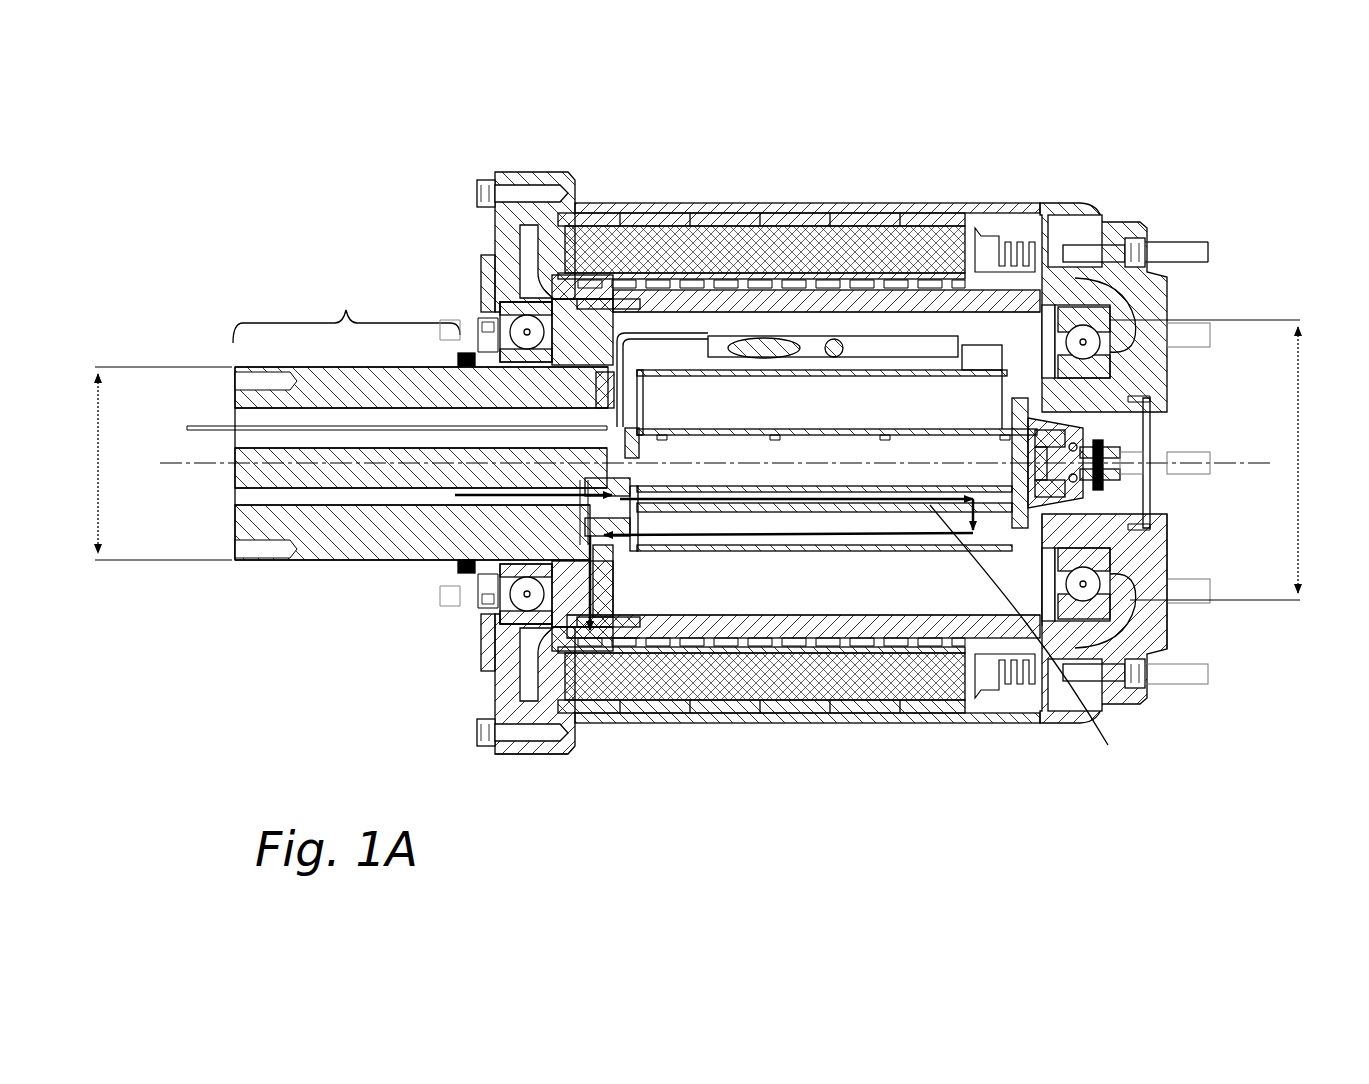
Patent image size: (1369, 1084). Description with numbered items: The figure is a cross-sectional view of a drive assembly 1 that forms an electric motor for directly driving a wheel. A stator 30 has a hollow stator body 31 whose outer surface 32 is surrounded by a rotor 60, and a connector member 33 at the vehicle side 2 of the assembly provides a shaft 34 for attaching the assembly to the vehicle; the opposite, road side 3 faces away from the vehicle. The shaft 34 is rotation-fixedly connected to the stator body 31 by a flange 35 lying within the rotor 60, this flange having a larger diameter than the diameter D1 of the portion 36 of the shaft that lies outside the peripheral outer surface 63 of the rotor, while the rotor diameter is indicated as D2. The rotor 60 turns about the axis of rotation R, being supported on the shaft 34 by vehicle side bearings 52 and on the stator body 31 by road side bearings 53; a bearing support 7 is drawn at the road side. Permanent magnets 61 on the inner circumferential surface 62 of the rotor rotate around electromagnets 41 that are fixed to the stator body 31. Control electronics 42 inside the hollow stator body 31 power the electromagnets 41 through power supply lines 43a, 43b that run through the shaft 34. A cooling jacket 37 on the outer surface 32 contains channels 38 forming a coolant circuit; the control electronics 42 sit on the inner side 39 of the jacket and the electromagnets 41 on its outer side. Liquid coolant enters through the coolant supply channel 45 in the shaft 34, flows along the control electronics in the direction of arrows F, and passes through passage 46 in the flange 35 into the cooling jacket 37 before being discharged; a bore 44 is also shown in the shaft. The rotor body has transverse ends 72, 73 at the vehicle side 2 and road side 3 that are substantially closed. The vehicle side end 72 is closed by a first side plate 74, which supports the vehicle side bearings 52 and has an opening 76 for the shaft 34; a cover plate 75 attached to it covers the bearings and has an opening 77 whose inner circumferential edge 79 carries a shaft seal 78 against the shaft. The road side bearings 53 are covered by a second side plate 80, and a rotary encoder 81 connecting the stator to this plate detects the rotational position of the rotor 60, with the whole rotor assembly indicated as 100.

The drive assembly 1 is at (277, 285).
The vehicle side 2 is at (210, 410).
The road side 3 is at (1188, 414).
The rear bearing support 7 is at (1118, 592).
The stator 30 is at (583, 640).
The hollow stator body 31 is at (962, 625).
The outer surface 32 is at (840, 650).
The connector member 33 is at (320, 575).
The shaft 34 is at (297, 563).
The flange 35 is at (590, 348).
The portion of the shaft 36 is at (346, 307).
The cooling jacket 37 is at (823, 270).
The channels 38 is at (688, 643).
The inner side of the cooling jacket 39 is at (788, 617).
The electromagnets 41 is at (866, 350).
The control electronics 42 is at (673, 388).
The power supply line 43a is at (227, 428).
The power supply line 43b is at (905, 390).
The bore 44 is at (303, 418).
The coolant supply channel 45 is at (240, 498).
The passage 46 is at (607, 640).
The vehicle side bearings 52 is at (500, 313).
The road side bearings 53 is at (1083, 342).
The rotor 60 is at (1105, 205).
The permanent magnets 61 is at (616, 220).
The inner circumferential surface 62 is at (672, 230).
The peripheral outer surface 63 is at (728, 218).
The transverse end 72 is at (447, 272).
The transverse end 73 is at (1150, 237).
The first side plate 74 is at (510, 225).
The cover plate 75 is at (480, 700).
The opening 76 is at (515, 630).
The opening 77 is at (480, 603).
The shaft seal 78 is at (462, 572).
The inner circumferential edge 79 is at (468, 582).
The second side plate 80 is at (1175, 625).
The rotary encoder 81 is at (1133, 470).
The rotor 100 is at (970, 272).
The arrows F is at (1023, 636).
The axis of rotation R is at (1258, 472).
The diameter D1 is at (148, 463).
The housing diameter D2 is at (1224, 460).